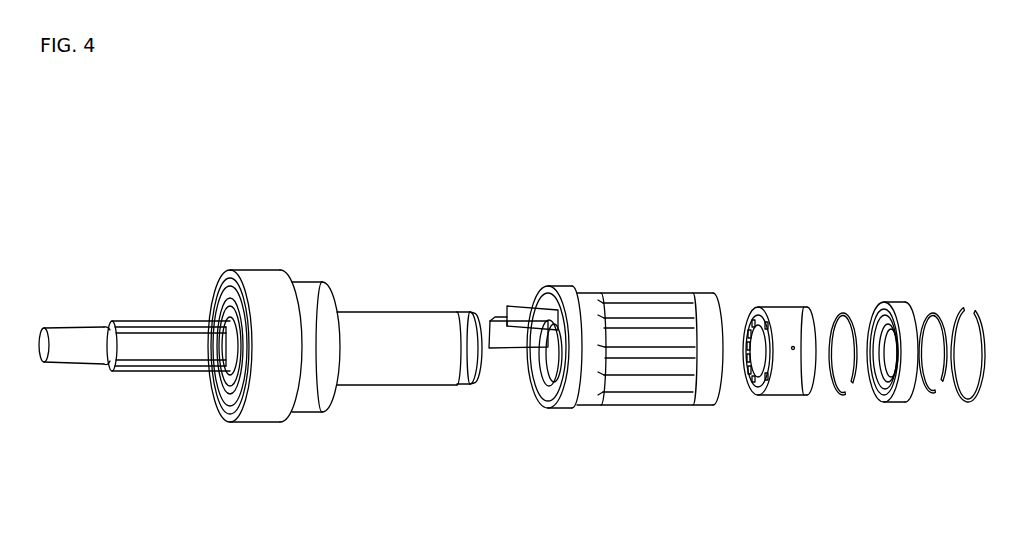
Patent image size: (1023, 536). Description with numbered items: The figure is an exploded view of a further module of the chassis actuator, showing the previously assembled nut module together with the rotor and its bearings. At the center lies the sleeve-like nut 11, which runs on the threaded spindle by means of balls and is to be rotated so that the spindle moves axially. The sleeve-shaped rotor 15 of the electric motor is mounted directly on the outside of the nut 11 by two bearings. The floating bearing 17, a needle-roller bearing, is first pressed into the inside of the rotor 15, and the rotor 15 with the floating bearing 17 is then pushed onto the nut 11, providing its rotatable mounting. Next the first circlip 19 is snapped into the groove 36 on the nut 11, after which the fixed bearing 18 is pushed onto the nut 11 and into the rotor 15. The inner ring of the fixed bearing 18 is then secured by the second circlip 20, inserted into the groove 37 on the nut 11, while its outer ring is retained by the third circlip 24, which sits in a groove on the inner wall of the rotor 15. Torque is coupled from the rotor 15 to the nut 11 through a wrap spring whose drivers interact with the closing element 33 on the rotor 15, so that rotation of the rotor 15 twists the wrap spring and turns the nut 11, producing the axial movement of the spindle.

The nut 11 is at (416, 326).
The rotor 15 is at (693, 305).
The floating bearing 17 is at (788, 310).
The fixed bearing 18 is at (897, 308).
The first circlip 19 is at (839, 315).
The second circlip 20 is at (934, 318).
The third circlip 24 is at (978, 320).
The closing element 33 is at (527, 308).
The groove 36 is at (458, 386).
The groove 37 is at (474, 386).